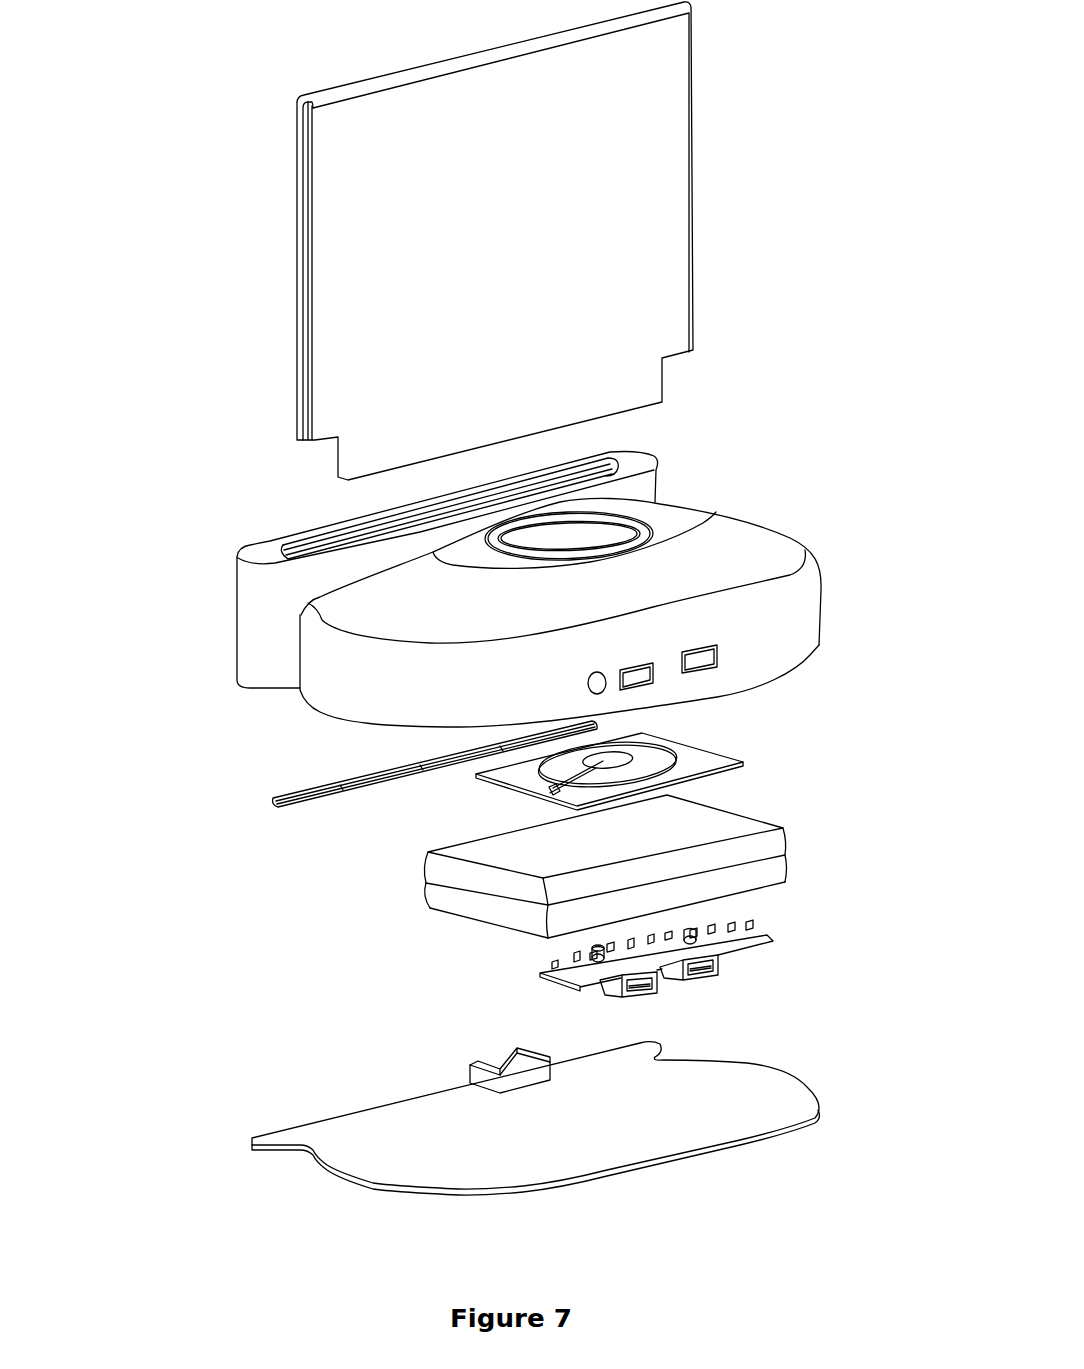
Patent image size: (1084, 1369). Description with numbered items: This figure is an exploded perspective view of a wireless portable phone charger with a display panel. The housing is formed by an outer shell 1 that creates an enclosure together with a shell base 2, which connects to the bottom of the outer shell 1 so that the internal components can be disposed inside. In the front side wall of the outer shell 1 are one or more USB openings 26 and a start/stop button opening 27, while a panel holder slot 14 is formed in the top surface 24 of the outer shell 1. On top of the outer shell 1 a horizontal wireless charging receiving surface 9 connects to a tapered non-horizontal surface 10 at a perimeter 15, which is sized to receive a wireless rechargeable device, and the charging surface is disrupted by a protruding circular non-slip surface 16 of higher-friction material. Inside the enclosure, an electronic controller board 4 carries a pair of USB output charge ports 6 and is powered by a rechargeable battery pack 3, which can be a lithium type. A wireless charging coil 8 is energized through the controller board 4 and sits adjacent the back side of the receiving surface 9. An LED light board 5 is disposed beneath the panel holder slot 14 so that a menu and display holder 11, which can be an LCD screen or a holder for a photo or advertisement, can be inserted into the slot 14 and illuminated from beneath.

The outer shell 1 is at (247, 640).
The shell base 2 is at (720, 1112).
The rechargeable battery pack 3 is at (417, 891).
The electronic controller board 4 is at (535, 973).
The LED light board 5 is at (267, 799).
The USB output charge port 6 is at (653, 990).
The wireless charging coil 8 is at (528, 777).
The horizontal wireless charging receiving surface 9 is at (687, 523).
The non-horizontal surface 10 is at (392, 580).
The menu and display holder 11 is at (595, 333).
The panel holder slot 14 is at (294, 537).
The perimeter 15 is at (704, 531).
The non-slip surface 16 is at (633, 522).
The top surface 24 is at (268, 547).
The USB openings 26 is at (655, 674).
The start/stop button opening 27 is at (590, 693).